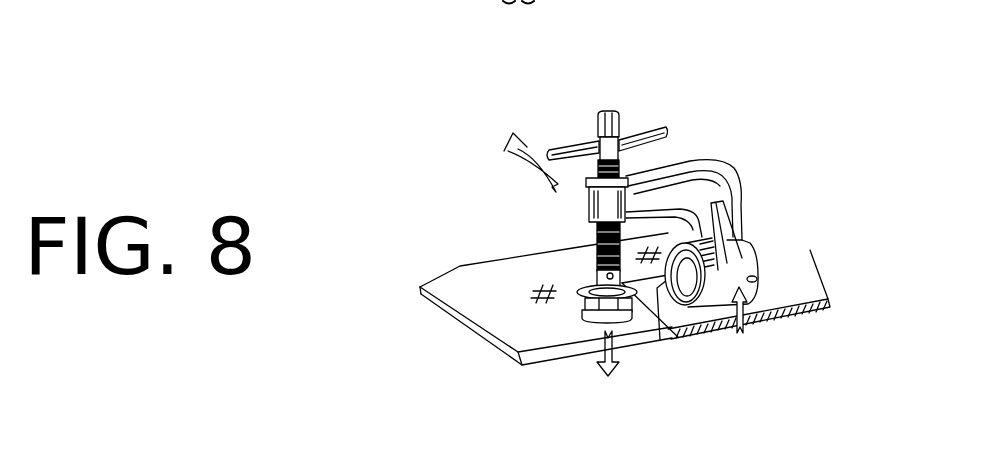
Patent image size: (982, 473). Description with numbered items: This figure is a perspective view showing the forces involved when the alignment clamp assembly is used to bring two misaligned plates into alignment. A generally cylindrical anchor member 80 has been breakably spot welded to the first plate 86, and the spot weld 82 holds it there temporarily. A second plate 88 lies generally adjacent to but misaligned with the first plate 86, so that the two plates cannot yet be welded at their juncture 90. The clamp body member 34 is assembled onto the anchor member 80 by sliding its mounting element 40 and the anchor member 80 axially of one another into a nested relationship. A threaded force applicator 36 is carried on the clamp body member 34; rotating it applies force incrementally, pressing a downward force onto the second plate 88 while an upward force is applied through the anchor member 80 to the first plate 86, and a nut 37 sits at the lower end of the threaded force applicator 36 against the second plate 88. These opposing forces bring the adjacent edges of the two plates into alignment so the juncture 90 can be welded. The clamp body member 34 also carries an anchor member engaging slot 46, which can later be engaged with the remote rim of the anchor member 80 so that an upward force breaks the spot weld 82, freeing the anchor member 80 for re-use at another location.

The clamp body member 34 is at (713, 165).
The threaded force applicator 36 is at (590, 228).
The nut 37 is at (582, 299).
The mounting element 40 is at (708, 264).
The anchor member engaging slot 46 is at (757, 279).
The anchor member 80 is at (660, 340).
The spot weld 82 is at (683, 276).
The first plate 86 is at (792, 289).
The second plate 88 is at (478, 303).
The juncture 90 is at (588, 257).